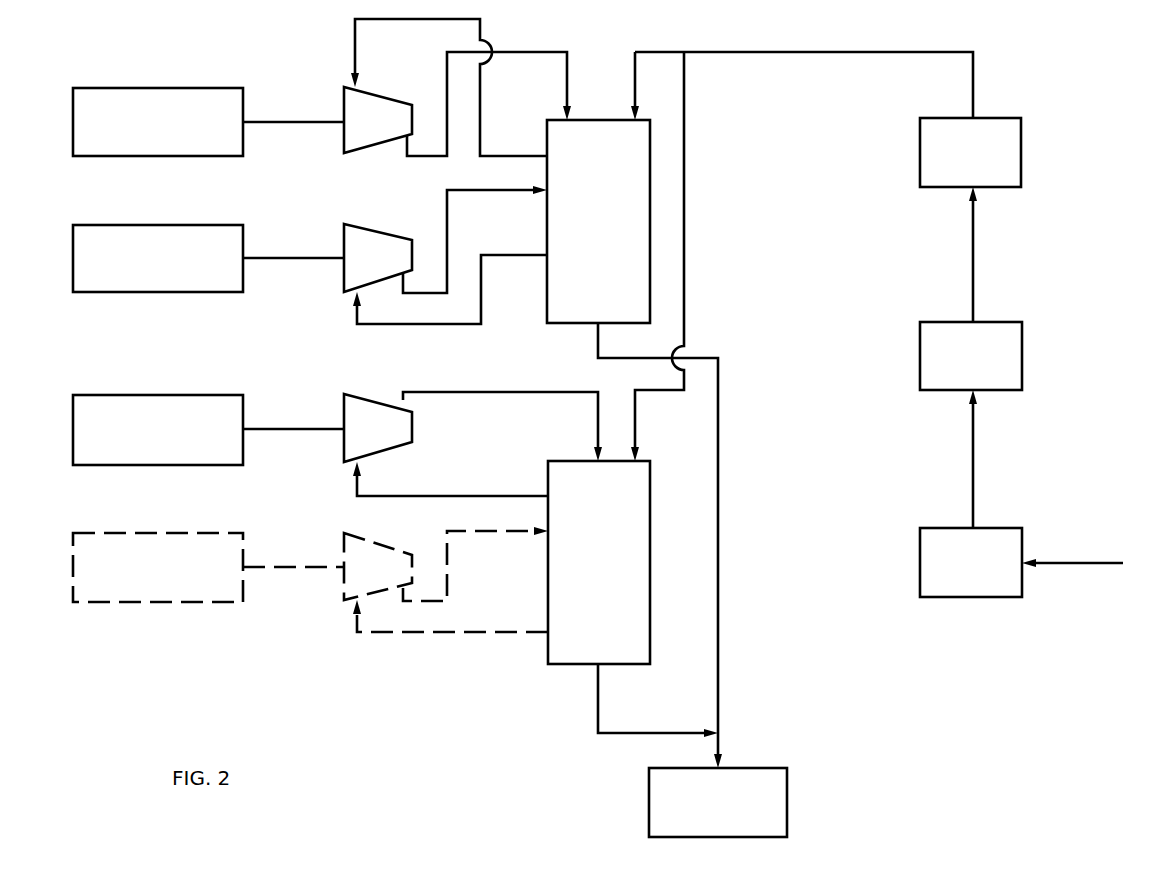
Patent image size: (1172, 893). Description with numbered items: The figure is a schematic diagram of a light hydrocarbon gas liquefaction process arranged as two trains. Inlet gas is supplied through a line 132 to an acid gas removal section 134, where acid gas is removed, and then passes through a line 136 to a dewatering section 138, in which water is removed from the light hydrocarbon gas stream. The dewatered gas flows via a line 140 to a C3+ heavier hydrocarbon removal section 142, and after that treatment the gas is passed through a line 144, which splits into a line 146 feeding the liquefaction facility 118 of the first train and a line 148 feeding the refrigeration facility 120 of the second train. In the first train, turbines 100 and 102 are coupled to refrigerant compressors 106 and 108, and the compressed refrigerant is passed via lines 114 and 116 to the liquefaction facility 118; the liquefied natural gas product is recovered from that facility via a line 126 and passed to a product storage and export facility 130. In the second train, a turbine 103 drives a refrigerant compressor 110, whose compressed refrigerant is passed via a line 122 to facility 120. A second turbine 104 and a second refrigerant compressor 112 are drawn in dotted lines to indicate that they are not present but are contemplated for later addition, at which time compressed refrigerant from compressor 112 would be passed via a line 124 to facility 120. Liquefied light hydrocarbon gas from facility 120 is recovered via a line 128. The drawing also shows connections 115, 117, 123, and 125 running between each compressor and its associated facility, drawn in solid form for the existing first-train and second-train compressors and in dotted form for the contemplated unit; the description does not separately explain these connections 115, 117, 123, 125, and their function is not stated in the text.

The turbine 100 is at (151, 88).
The turbine 102 is at (151, 225).
The turbine 103 is at (147, 395).
The turbine 104 is at (148, 533).
The refrigerant compressor 106 is at (368, 146).
The refrigerant compressor 108 is at (344, 280).
The refrigerant compressor 110 is at (366, 398).
The refrigerant compressor 112 is at (345, 540).
The line 114 is at (520, 52).
The first control signal line 115 is at (402, 20).
The line 116 is at (484, 190).
The second control signal line 117 is at (512, 256).
The liquefaction facility 118 is at (548, 272).
The refrigeration facility 120 is at (650, 558).
The line 122 is at (459, 392).
The third control signal line 123 is at (451, 496).
The line 124 is at (483, 531).
The optional fourth control signal line 125 is at (475, 632).
The line 126 is at (720, 688).
The line 128 is at (621, 733).
The product storage and export facility 130 is at (762, 768).
The line 132 is at (1070, 563).
The acid gas removal section 134 is at (930, 528).
The line 136 is at (974, 475).
The dewatering section 138 is at (1022, 362).
The line 140 is at (974, 276).
The C3+ heavier hydrocarbon removal section 142 is at (1022, 153).
The line 144 is at (885, 52).
The line 146 is at (656, 52).
The line 148 is at (685, 276).